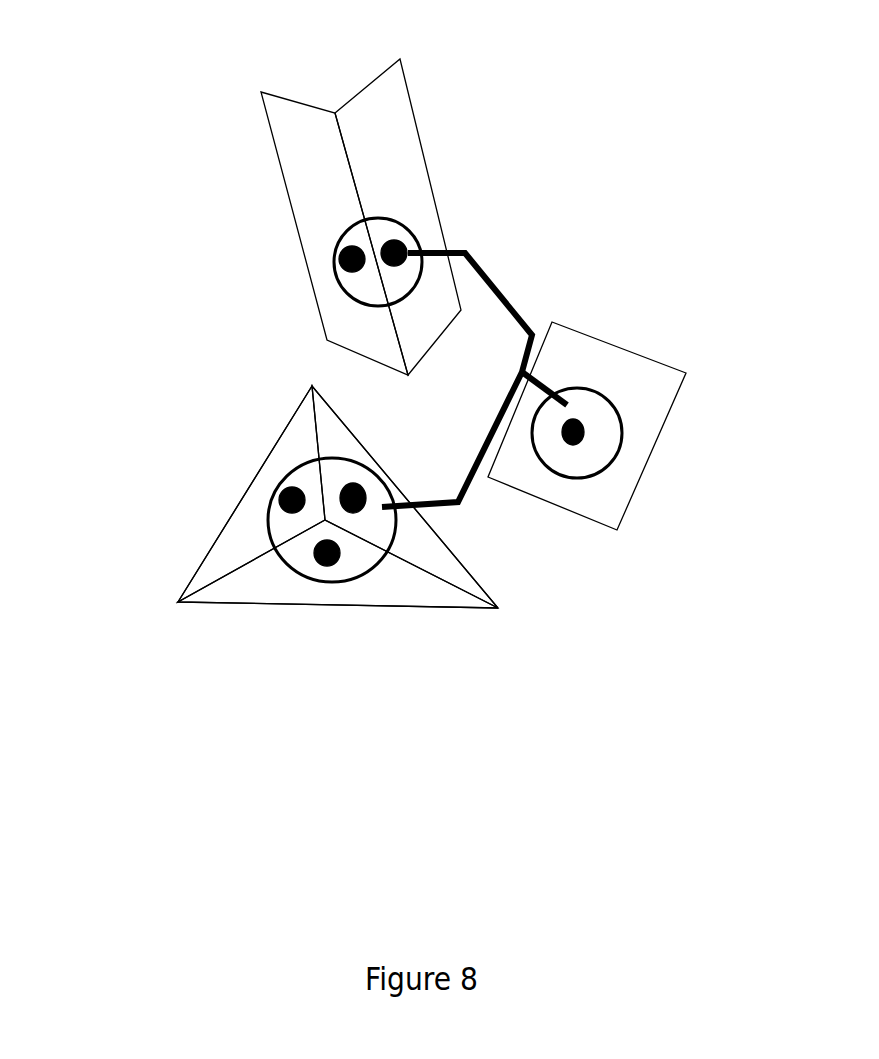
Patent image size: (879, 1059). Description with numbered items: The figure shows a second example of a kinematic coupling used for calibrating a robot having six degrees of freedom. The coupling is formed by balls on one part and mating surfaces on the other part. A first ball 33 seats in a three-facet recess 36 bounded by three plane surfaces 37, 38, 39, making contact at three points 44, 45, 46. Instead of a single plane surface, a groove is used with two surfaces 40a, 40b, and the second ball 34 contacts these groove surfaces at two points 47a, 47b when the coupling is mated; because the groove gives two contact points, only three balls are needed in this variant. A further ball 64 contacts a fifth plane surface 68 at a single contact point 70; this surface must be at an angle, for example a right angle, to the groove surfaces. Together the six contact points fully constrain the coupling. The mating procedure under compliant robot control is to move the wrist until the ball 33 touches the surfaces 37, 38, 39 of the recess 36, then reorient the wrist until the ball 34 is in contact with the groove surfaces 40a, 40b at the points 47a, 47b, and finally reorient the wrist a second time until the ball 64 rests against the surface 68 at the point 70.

The ball 33 is at (373, 553).
The ball 34 is at (392, 230).
The recess 36 is at (287, 624).
The plane surface 37 is at (228, 559).
The plane surface 38 is at (332, 433).
The plane surface 39 is at (327, 593).
The groove surface 40a is at (337, 175).
The groove surface 40b is at (372, 130).
The contact point 44 is at (337, 497).
The contact point 45 is at (267, 502).
The contact point 46 is at (315, 563).
The contact point 47a is at (335, 252).
The contact point 47b is at (402, 242).
The ball 64 is at (612, 430).
The fifth plane surface 68 is at (611, 348).
The contact point 70 is at (583, 422).